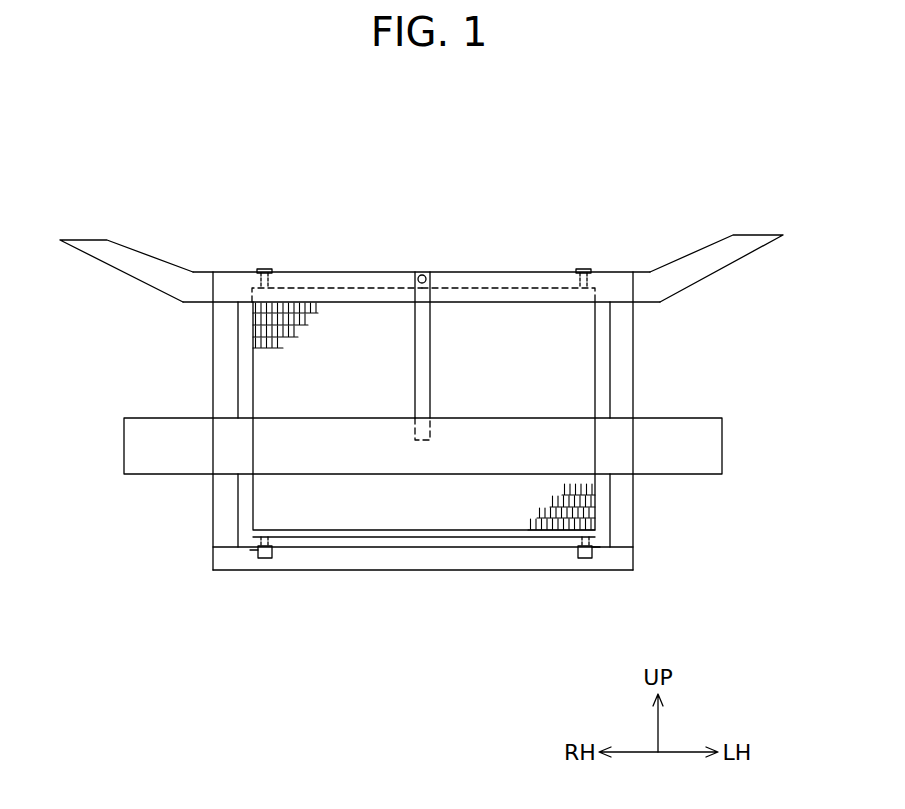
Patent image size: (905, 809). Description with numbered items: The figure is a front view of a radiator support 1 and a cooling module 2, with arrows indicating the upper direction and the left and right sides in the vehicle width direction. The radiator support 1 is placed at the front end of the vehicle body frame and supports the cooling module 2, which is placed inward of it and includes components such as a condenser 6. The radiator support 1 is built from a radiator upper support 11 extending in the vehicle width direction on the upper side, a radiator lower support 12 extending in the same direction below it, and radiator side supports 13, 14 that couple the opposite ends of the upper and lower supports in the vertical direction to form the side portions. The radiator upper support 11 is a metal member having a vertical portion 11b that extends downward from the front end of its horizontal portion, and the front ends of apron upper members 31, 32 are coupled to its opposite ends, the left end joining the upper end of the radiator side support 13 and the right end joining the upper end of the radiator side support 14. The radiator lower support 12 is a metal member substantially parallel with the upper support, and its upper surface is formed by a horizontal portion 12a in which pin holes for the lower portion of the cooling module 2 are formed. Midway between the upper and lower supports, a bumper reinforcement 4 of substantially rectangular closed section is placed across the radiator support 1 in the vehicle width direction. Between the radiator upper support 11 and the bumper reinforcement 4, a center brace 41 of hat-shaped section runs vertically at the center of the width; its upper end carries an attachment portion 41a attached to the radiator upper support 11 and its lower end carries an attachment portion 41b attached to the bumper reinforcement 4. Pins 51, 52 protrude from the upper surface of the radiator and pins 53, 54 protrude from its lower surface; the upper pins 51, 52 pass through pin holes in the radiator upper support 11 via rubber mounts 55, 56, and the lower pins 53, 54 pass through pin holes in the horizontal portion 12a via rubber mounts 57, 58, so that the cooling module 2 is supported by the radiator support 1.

The radiator support 1 is at (500, 270).
The cooling module 2 is at (410, 505).
The bumper reinforcement 4 is at (677, 417).
The condenser 6 is at (348, 518).
The radiator upper support 11 is at (372, 272).
The vertical portion 11b is at (317, 280).
The radiator lower support 12 is at (445, 571).
The horizontal portion 12a is at (482, 540).
The radiator side support 13 is at (634, 350).
The radiator side support 14 is at (212, 373).
The apron upper member 31 is at (708, 262).
The apron upper member 32 is at (139, 262).
The center brace 41 is at (431, 352).
The attachment portion 41a is at (432, 291).
The attachment portion 41b is at (416, 430).
The pin 51 is at (590, 275).
The pin 52 is at (242, 272).
The pin 53 is at (593, 548).
The pin 54 is at (252, 552).
The rubber mount 55 is at (582, 268).
The rubber mount 56 is at (264, 269).
The rubber mount 57 is at (583, 556).
The rubber mount 58 is at (268, 558).